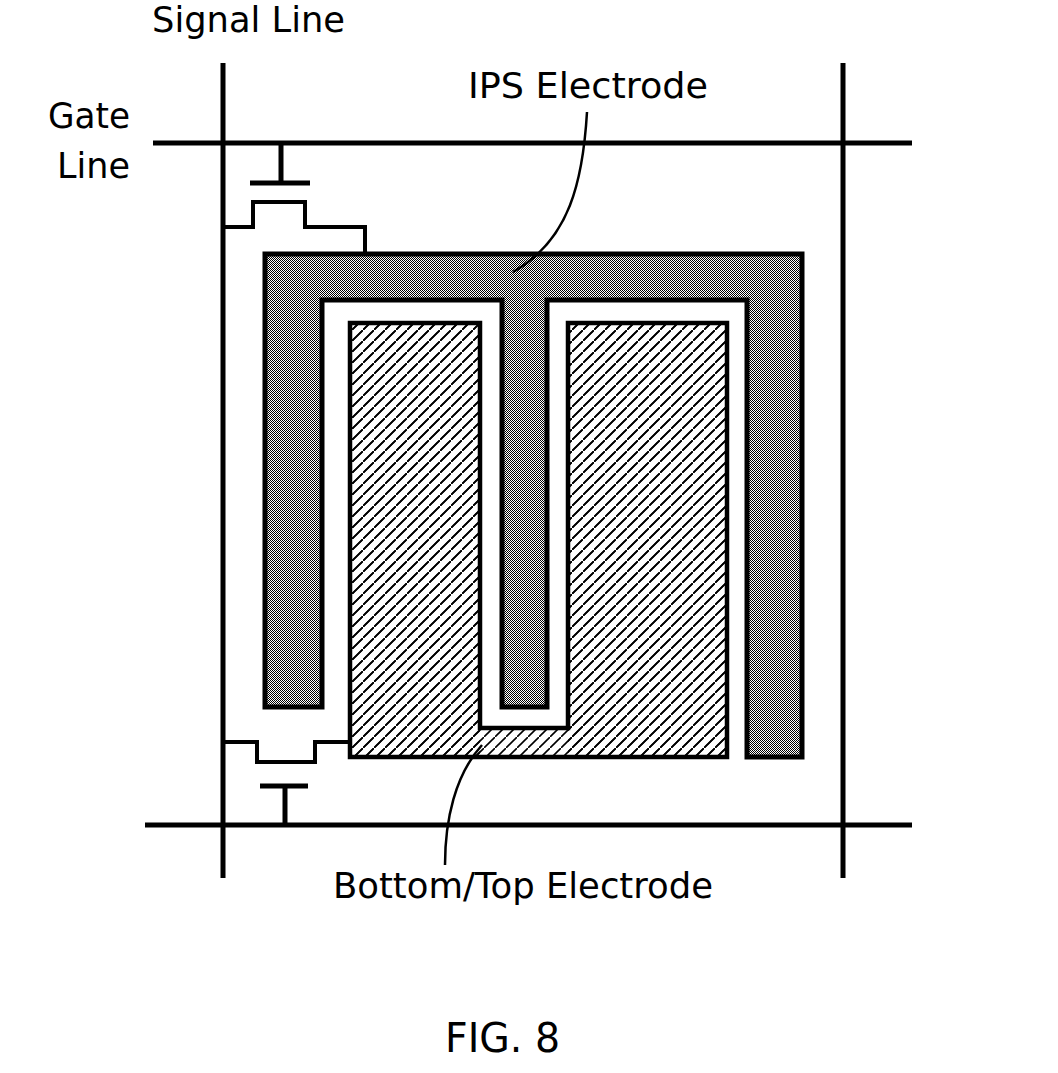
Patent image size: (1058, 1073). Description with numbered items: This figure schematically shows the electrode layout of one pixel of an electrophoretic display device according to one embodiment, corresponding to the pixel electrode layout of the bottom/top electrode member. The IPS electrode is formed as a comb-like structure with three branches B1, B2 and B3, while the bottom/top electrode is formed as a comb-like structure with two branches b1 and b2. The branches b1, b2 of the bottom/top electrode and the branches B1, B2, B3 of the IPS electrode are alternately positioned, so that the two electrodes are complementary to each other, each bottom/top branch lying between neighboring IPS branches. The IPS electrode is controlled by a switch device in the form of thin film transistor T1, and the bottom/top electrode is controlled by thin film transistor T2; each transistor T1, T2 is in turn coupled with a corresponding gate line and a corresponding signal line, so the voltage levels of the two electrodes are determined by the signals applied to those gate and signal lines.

The thin film transistor T1 is at (298, 198).
The thin film transistor T2 is at (299, 783).
The branch B1 is at (303, 415).
The branch B2 is at (522, 365).
The branch B3 is at (765, 502).
The branch b1 is at (438, 633).
The branch b2 is at (660, 618).